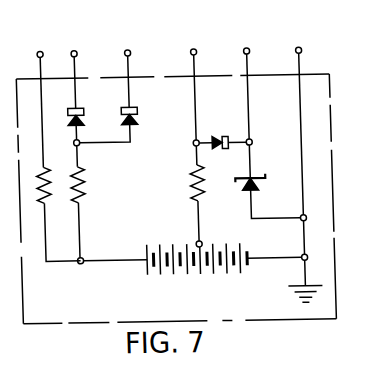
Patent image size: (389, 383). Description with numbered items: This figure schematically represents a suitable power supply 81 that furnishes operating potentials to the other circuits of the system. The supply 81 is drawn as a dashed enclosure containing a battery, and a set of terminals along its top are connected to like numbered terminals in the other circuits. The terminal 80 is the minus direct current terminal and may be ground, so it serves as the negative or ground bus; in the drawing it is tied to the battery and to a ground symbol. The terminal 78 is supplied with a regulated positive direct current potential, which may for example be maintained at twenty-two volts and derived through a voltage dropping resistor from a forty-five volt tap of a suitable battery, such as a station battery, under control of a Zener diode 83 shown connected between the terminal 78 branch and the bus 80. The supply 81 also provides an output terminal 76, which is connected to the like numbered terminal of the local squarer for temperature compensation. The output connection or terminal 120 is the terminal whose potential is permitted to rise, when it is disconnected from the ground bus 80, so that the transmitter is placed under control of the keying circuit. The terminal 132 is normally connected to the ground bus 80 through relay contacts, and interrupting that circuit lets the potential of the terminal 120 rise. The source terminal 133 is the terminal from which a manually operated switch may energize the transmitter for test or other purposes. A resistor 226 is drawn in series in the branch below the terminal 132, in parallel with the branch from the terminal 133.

The source terminal 133 is at (38, 52).
The terminal 132 is at (73, 49).
The output connection or terminal 120 is at (126, 52).
The output terminal 76 is at (192, 51).
The terminal 78 is at (246, 51).
The terminal 80 is at (298, 52).
The power supply 81 is at (327, 108).
The Zener diode 83 is at (260, 182).
The resistor 226 is at (80, 194).